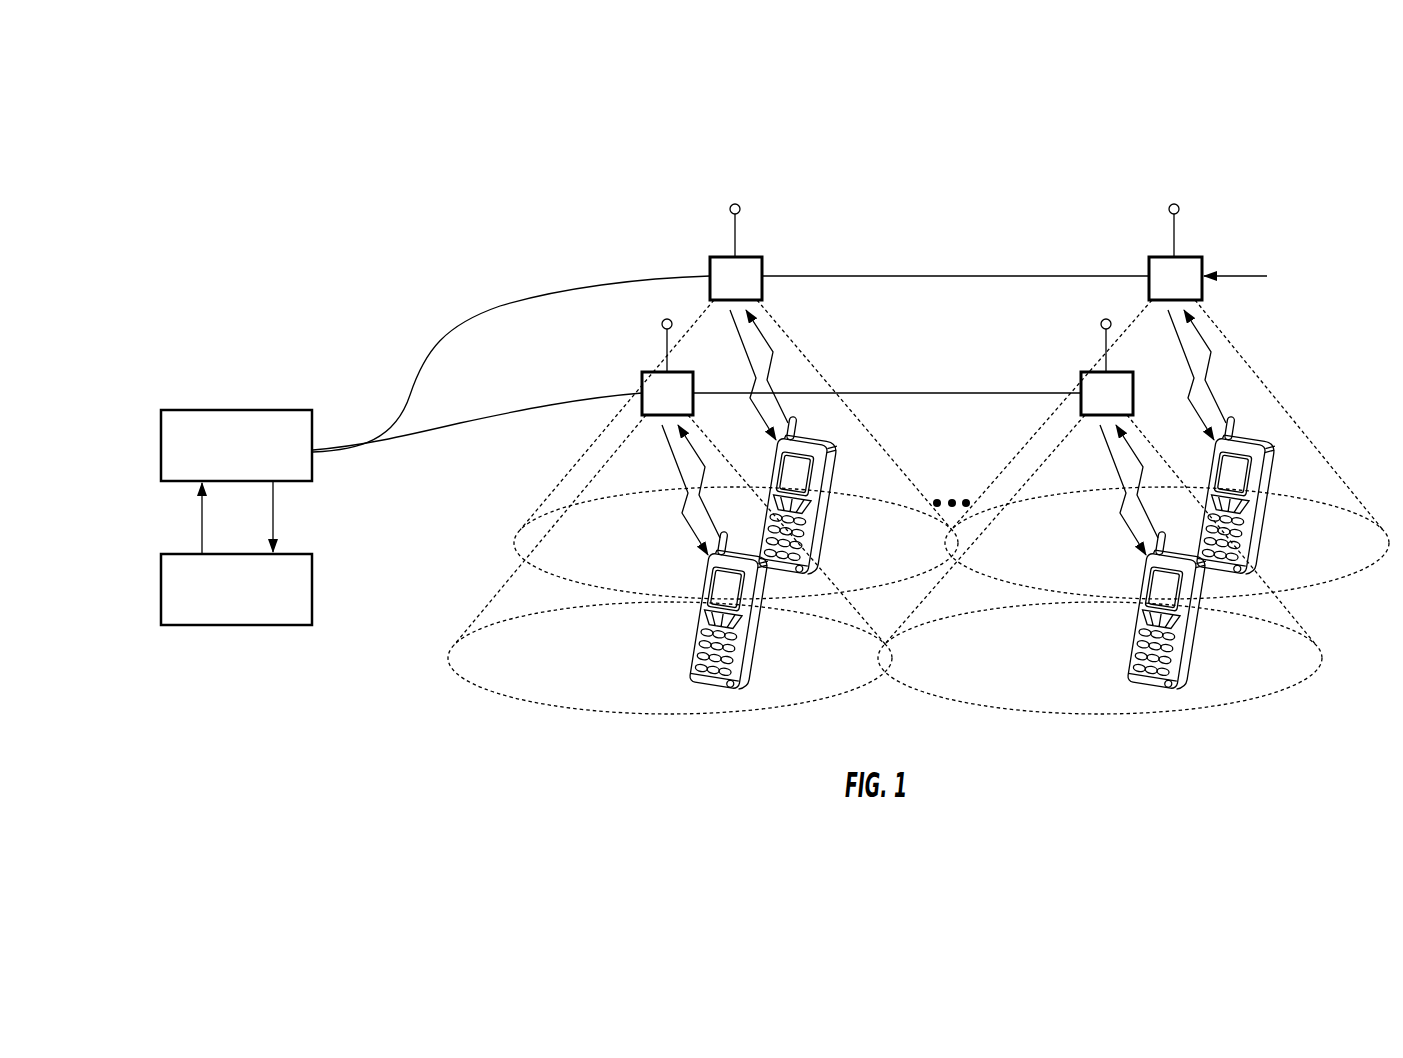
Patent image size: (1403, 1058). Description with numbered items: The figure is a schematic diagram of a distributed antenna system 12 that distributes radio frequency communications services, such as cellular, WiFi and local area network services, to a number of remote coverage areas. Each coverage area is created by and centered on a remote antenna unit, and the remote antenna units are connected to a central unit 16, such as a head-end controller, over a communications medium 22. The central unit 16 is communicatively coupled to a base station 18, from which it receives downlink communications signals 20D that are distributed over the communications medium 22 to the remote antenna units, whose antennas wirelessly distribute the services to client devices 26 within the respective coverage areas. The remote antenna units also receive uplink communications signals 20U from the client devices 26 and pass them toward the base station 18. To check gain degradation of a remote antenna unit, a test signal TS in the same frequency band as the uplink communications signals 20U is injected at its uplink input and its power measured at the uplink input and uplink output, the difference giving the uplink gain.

The distributed antenna system 12 is at (882, 226).
The central unit 16 is at (251, 458).
The base station 18 is at (251, 603).
The downlink communications signals 20D is at (199, 528).
The uplink communications signals 20U is at (276, 530).
The communications medium 22 is at (533, 293).
The client devices 26 is at (841, 470).
The test signal TS is at (1243, 276).